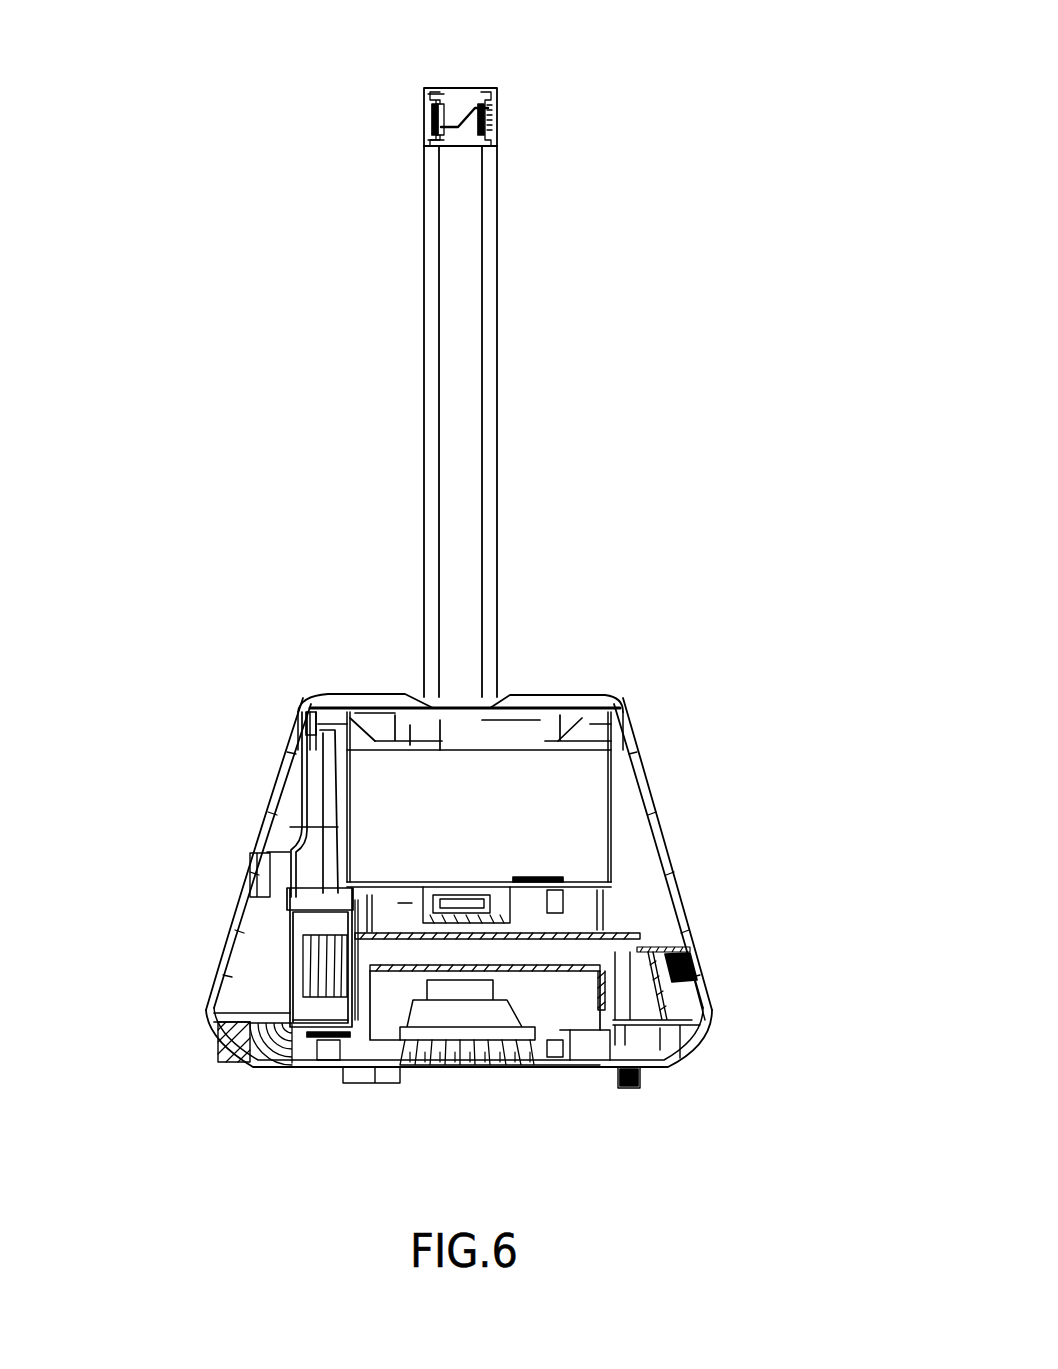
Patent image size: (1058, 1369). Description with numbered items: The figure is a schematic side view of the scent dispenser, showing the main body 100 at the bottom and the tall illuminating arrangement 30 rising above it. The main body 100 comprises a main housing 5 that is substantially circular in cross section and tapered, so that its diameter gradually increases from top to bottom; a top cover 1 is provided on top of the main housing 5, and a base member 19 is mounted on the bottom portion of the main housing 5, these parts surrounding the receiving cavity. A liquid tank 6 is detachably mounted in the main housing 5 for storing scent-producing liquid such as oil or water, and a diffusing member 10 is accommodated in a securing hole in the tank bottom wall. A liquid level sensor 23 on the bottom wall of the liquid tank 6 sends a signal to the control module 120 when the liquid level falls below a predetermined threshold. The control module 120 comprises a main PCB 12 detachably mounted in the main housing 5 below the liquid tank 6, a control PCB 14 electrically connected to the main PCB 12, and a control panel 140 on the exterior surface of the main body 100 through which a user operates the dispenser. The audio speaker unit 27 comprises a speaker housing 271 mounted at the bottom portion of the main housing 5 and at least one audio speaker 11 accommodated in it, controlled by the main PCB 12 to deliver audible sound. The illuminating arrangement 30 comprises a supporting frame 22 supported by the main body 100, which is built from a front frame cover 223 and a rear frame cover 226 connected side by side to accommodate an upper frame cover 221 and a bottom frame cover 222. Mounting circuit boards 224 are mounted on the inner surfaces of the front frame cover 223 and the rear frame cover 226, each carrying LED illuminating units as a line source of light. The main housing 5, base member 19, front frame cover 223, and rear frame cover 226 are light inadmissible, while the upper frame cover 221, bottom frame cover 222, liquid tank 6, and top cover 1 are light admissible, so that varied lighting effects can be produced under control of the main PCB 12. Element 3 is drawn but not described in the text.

The top cover 1 is at (543, 697).
The cover ring 3 is at (392, 750).
The main housing 5 is at (663, 833).
The liquid tank 6 is at (340, 830).
The diffusing member 10 is at (462, 893).
The audio speakers 11 is at (437, 1007).
The main Printed Circuit Board 12 is at (387, 937).
The control PCB 14 is at (677, 1003).
The base member 19 is at (465, 1042).
The supporting frame 22 is at (686, 400).
The liquid level sensor 23 is at (530, 882).
The audio speaker unit 27 is at (345, 1030).
The illuminating arrangement 30 is at (312, 264).
The main body 100 is at (673, 638).
The control module 120 is at (539, 948).
The control panel 140 is at (700, 958).
The upper frame cover 221 is at (453, 97).
The bottom frame cover 222 is at (457, 137).
The front frame cover 223 is at (420, 108).
The mounting circuit boards 224 is at (423, 130).
The rear frame cover 226 is at (493, 107).
The speaker housing 271 is at (600, 970).